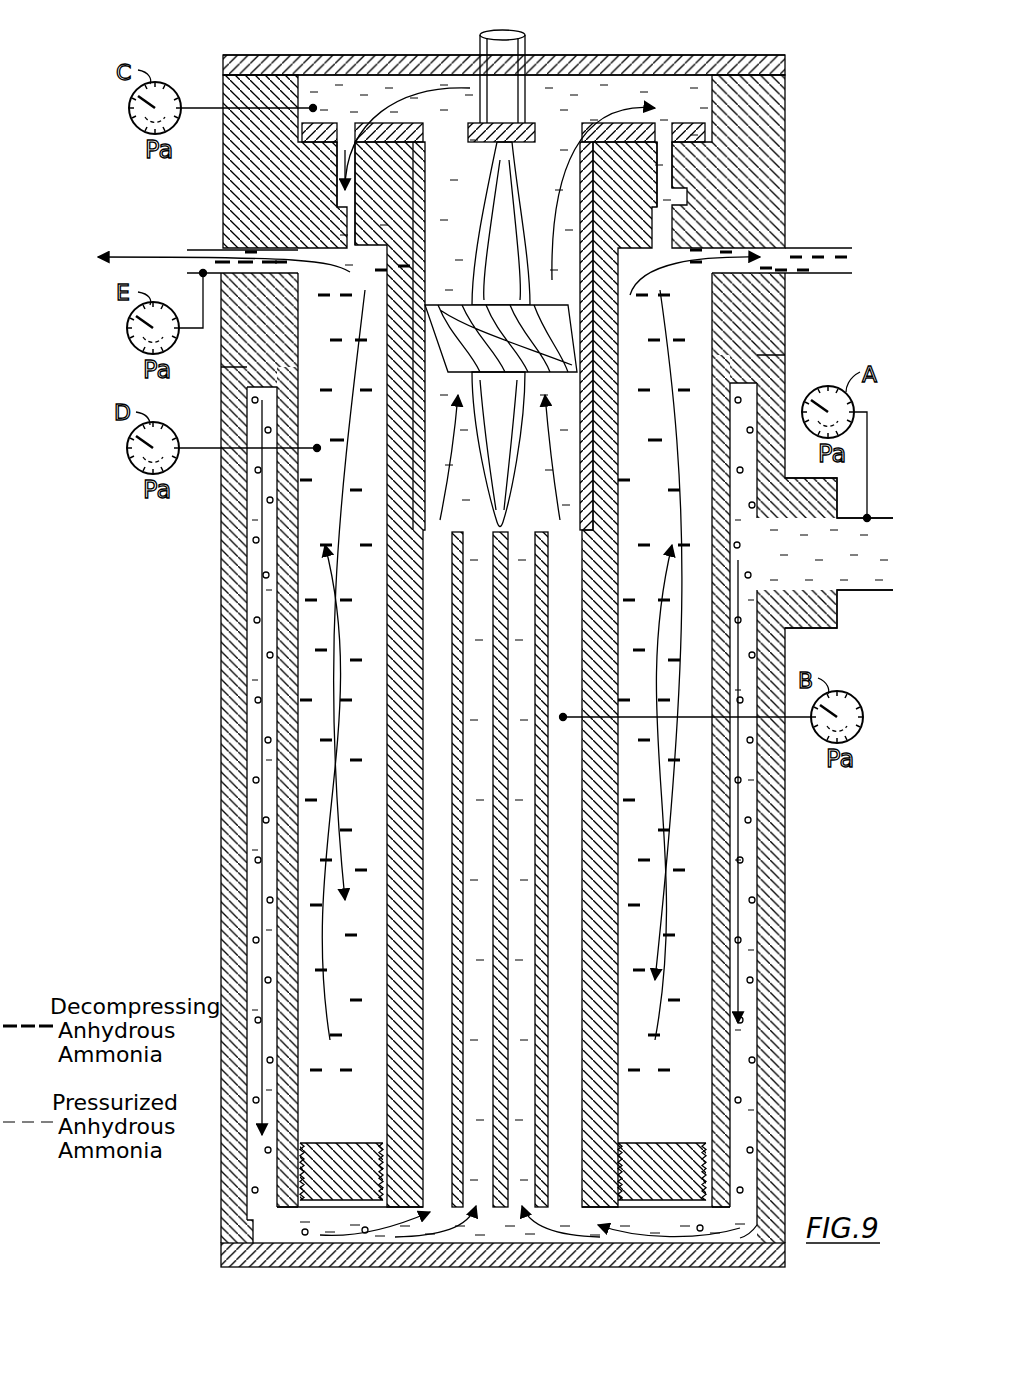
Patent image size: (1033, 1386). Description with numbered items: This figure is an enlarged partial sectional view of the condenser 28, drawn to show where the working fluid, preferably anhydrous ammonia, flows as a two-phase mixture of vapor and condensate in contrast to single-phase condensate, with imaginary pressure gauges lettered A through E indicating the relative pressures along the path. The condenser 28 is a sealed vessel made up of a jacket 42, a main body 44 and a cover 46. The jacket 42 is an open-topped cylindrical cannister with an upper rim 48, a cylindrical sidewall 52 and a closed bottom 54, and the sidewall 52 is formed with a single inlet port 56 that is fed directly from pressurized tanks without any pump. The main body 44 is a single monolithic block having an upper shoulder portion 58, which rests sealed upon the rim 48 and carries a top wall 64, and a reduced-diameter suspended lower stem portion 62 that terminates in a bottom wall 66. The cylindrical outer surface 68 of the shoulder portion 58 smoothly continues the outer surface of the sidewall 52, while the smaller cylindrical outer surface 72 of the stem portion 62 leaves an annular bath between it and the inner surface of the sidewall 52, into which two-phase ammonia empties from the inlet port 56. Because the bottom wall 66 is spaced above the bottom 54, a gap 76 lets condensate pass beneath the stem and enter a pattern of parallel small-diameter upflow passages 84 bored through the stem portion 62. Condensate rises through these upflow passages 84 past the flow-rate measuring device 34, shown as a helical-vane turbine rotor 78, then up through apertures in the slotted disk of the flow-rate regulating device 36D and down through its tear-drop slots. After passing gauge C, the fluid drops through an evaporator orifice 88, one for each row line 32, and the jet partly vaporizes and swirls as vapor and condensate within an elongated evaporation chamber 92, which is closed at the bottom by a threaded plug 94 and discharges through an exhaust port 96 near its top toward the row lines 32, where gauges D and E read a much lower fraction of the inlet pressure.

The condenser 28 is at (800, 70).
The row lines 32 is at (118, 255).
The flow-rate measuring device 34 is at (786, 205).
The flow-rate regulating device 36D is at (691, 141).
The jacket 42 is at (221, 536).
The main body 44 is at (786, 166).
The cover 46 is at (552, 54).
The upper rim 48 is at (222, 75).
The cylindrical sidewall 52 is at (247, 562).
The closed bottom 54 is at (283, 1255).
The inlet port 56 is at (865, 592).
The upper shoulder portion 58 is at (790, 378).
The lower stem portion 62 is at (387, 852).
The top wall 64 is at (386, 140).
The bottom wall 66 is at (400, 1215).
The cylindrical outer surface 68 is at (766, 362).
The cylindrical outer surface 72 is at (403, 866).
The gap 76 is at (360, 1200).
The helical-vane turbine rotor 78 is at (572, 342).
The upflow passages 84 is at (300, 940).
The evaporator orifice 88 is at (337, 225).
The evaporation chamber 92 is at (477, 927).
The threaded plug 94 is at (300, 1168).
The exhaust port 96 is at (253, 255).